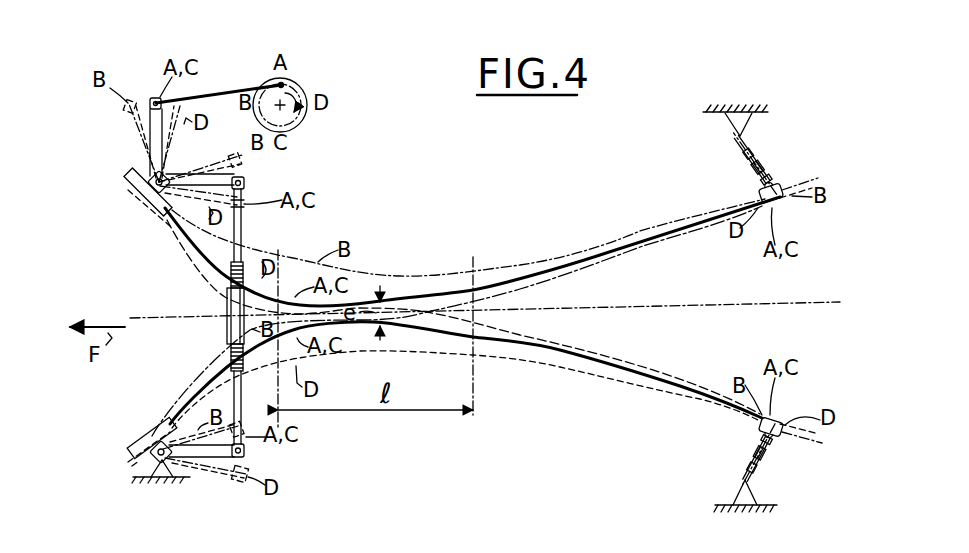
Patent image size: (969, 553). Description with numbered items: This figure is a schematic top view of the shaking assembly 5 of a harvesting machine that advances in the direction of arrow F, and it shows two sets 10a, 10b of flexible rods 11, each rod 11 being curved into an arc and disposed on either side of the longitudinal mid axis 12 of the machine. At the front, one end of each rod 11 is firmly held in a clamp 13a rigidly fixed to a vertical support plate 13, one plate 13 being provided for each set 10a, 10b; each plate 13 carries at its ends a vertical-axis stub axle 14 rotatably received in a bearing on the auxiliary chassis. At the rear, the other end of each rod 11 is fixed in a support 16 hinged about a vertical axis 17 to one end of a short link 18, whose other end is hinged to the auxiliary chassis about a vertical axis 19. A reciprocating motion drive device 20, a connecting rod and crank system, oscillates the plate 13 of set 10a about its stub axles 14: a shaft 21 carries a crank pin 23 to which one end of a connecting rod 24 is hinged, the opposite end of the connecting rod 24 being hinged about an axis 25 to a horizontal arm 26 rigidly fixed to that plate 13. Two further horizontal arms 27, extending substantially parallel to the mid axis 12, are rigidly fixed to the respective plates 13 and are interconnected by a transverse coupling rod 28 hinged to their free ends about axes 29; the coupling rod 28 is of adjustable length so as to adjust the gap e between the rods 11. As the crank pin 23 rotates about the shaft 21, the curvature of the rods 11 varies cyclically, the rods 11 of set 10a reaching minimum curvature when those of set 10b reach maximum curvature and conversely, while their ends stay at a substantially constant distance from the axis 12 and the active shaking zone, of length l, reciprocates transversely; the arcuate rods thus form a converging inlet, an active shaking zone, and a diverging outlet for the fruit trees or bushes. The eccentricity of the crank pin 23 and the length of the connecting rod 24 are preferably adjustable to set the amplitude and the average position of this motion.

The shaking assembly 5 is at (130, 297).
The first set of rods 10a is at (470, 244).
The second set of rods 10b is at (485, 390).
The flexible rod 11 is at (503, 287).
The longitudinal mid axis 12 is at (765, 305).
The vertical support plate 13 is at (127, 168).
The clamp 13a is at (147, 197).
The stub axle 14 is at (164, 176).
The support 16 is at (782, 205).
The vertical axis 17 is at (780, 186).
The short link 18 is at (748, 163).
The vertical axis 19 is at (736, 136).
The reciprocating motion drive device 20 is at (215, 80).
The shaft 21 is at (308, 90).
The crank pin 23 is at (300, 70).
The connecting rod 24 is at (213, 100).
The axis 25 is at (153, 97).
The horizontal arm 26 is at (150, 135).
The horizontal arm 27 is at (240, 176).
The coupling rod 28 is at (242, 235).
The axis 29 is at (245, 183).